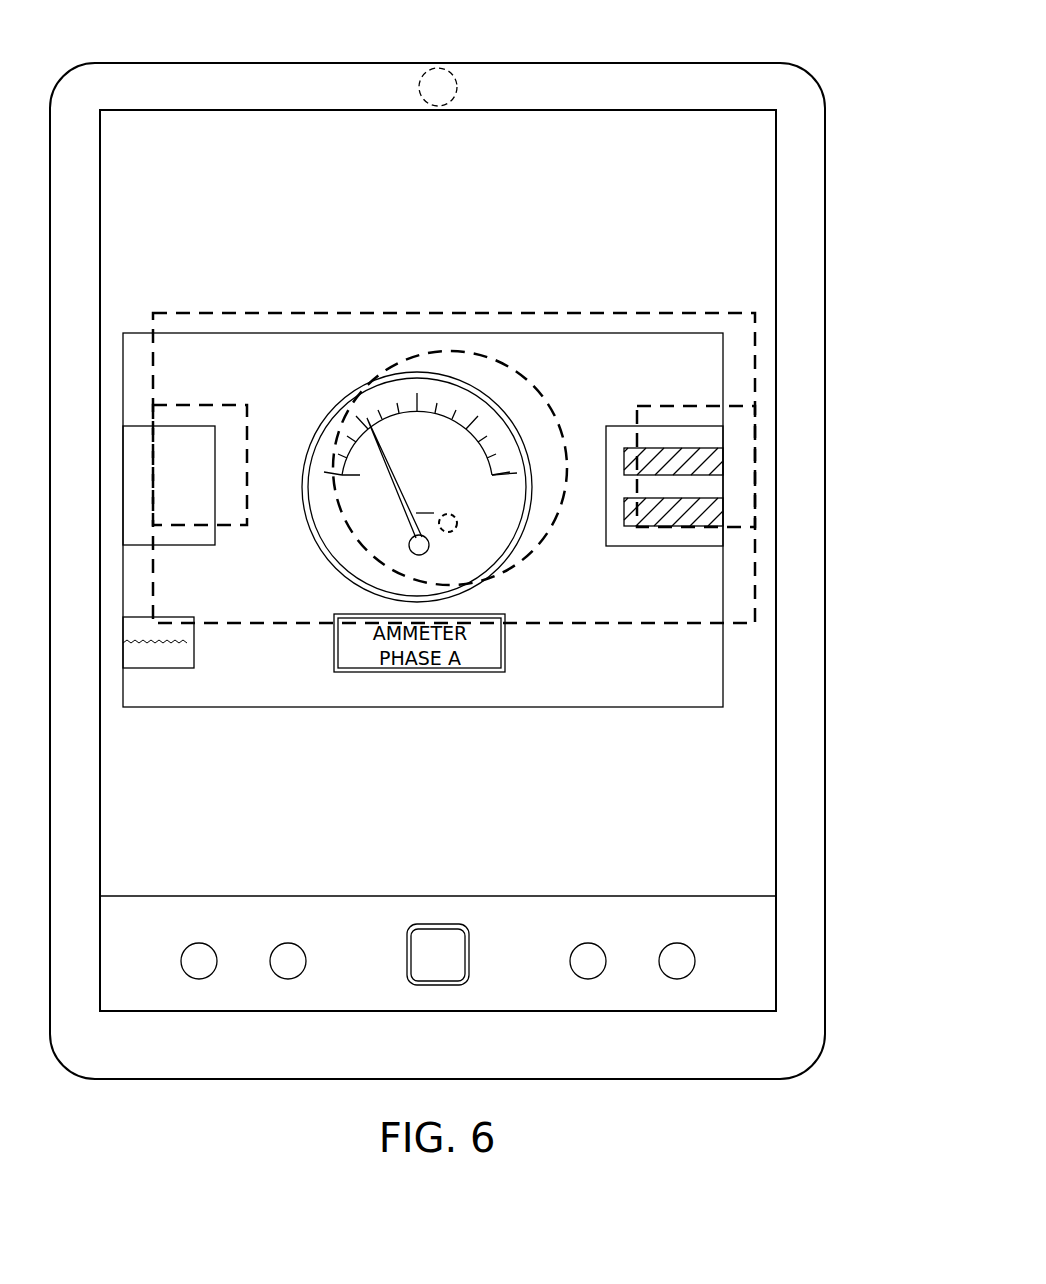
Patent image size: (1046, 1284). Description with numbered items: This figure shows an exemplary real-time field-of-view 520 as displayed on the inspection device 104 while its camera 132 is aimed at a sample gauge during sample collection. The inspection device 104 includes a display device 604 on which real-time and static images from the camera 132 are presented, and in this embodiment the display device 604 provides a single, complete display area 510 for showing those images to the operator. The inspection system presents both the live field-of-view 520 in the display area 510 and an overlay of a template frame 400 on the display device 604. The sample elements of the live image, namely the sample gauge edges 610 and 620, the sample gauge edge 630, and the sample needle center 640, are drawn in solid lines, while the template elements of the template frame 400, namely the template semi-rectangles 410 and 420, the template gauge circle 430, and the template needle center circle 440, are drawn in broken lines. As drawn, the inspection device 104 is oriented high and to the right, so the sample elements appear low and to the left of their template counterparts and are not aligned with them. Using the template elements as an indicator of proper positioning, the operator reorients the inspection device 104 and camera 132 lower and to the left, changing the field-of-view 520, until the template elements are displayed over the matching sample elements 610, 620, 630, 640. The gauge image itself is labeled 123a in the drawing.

The inspection device 104 is at (703, 62).
The camera 132 is at (426, 72).
The display device 604 is at (560, 110).
The field-of-view 520 is at (776, 680).
The display area 510 is at (703, 763).
The template frame 400 is at (556, 306).
The template semi-rectangle 410 is at (181, 405).
The template semi-rectangle 420 is at (645, 406).
The template gauge circle 430 is at (524, 376).
The template needle center circle 440 is at (456, 521).
The virtual meter 123a is at (429, 407).
The sample gauge edge 610 is at (333, 413).
The sample gauge edge 620 is at (323, 520).
The sample gauge edge 630 is at (318, 446).
The sample needle center 640 is at (428, 553).